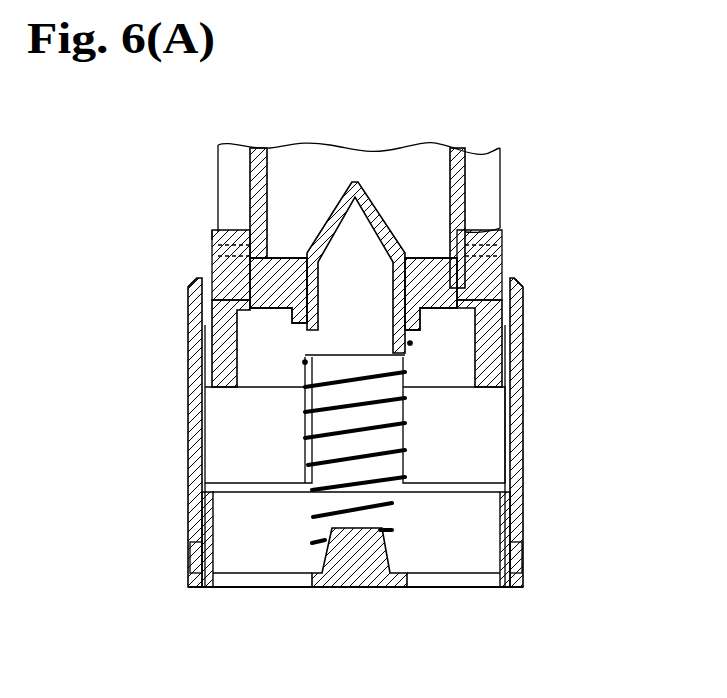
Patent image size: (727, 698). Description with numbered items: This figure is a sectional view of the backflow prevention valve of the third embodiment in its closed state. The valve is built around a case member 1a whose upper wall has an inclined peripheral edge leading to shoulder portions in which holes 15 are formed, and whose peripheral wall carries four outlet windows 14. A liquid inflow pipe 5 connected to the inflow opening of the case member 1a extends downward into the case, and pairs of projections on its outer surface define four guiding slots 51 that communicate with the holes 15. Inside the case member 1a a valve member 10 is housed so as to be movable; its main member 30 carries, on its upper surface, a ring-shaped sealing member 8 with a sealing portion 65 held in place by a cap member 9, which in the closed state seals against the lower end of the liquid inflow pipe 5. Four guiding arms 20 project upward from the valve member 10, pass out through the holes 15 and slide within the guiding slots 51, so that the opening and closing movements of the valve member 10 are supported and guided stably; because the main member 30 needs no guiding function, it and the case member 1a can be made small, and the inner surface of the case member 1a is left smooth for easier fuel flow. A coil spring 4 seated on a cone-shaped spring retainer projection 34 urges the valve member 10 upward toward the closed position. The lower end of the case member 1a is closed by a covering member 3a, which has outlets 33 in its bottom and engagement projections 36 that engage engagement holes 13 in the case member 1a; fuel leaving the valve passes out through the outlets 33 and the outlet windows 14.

The case member 1a is at (523, 473).
The covering member 3a is at (188, 587).
The spring 4 is at (393, 502).
The liquid inflow pipe 5 is at (465, 143).
The guiding slots 51 is at (487, 183).
The sealing member 8 is at (480, 300).
The cap member 9 is at (360, 185).
The valve member 10 is at (283, 308).
The engagement holes 13 is at (196, 513).
The outlet windows 14 is at (252, 433).
The holes 15 is at (198, 280).
The guiding arms 20 is at (235, 230).
The main member 30 is at (493, 338).
The outlets 33 is at (262, 580).
The spring retainer projection 34 is at (353, 575).
The engagement projections 36 is at (198, 535).
The sealing portion 65 is at (213, 232).